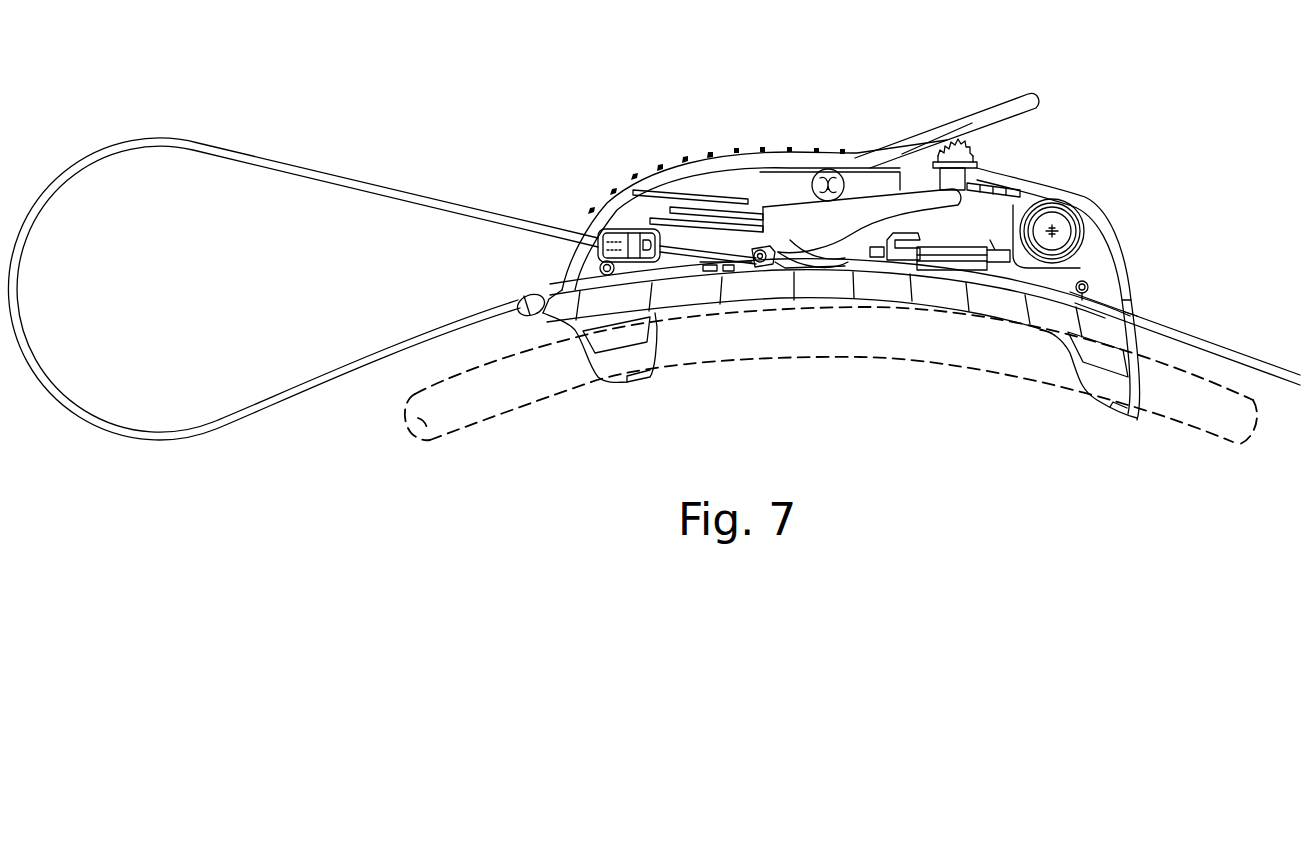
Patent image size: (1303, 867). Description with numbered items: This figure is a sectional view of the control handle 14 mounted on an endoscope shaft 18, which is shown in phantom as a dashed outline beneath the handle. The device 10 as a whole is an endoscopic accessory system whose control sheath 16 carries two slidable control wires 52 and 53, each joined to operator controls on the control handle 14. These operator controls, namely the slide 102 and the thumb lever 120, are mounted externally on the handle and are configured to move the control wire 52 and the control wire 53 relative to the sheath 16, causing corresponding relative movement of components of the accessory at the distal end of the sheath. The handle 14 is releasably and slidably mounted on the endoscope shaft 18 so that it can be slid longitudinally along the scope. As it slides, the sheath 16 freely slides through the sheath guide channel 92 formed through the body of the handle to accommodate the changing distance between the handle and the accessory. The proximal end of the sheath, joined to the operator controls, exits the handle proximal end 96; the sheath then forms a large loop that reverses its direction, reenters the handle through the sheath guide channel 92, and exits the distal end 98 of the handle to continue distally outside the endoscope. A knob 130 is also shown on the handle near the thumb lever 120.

The headgear strap adjustment device 10 is at (1114, 84).
The control handle 14 is at (613, 163).
The control sheath 16 is at (254, 167).
The endoscope shaft 18 is at (794, 368).
The control wire 52 is at (738, 258).
The control wire 53 is at (845, 266).
The sheath guide channel 92 is at (1143, 317).
The handle proximal end 96 is at (547, 258).
The distal end of the handle 98 is at (1145, 286).
The slide 102 is at (763, 214).
The thumb lever 120 is at (903, 140).
The knob 130 is at (1018, 211).